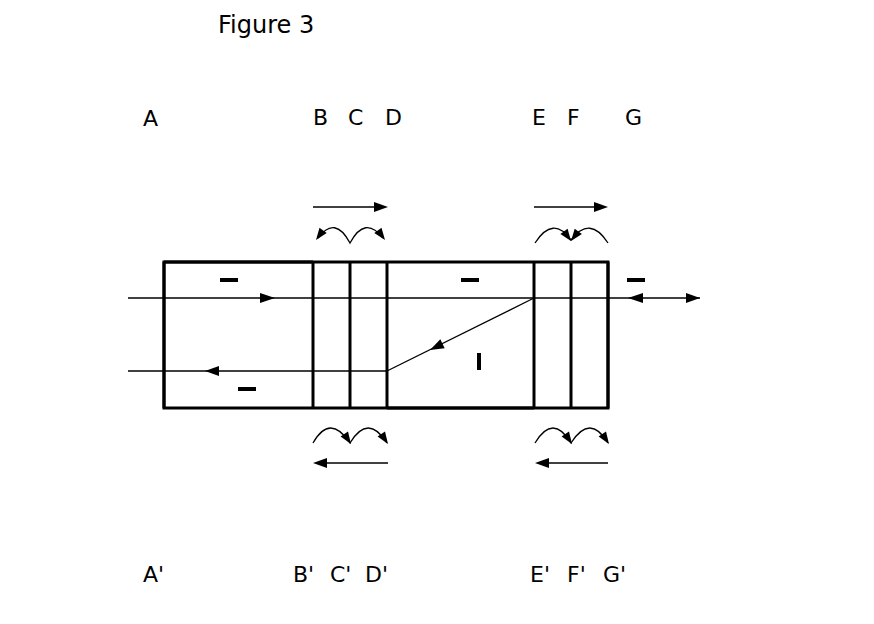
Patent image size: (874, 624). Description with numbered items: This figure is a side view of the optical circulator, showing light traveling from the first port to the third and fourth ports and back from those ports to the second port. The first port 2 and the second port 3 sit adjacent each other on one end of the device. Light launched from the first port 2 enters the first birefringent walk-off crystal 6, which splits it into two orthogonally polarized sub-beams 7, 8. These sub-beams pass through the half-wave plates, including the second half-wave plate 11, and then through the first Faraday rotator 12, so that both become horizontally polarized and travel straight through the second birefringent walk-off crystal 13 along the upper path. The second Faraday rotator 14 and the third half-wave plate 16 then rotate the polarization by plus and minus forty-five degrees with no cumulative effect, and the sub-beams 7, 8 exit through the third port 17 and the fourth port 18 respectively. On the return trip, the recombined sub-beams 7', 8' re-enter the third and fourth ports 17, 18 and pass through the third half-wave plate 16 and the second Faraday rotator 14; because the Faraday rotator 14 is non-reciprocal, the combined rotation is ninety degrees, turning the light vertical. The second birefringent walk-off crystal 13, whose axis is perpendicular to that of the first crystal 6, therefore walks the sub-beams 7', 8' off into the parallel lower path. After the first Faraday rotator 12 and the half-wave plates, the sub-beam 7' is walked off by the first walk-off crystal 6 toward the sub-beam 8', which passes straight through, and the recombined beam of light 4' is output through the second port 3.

The first port 2 is at (165, 297).
The second port 3 is at (165, 368).
The recombined beam of light 4' is at (98, 396).
The first birefringent walk-off crystal 6 is at (278, 262).
The sub-beam 7 is at (200, 256).
The sub-beam 8 is at (191, 259).
The sub-beam 7' is at (256, 442).
The sub-beam 8' is at (187, 439).
The second half-wave plate 11 is at (313, 388).
The first Faraday rotator 12 is at (392, 262).
The second birefringent walk-off crystal 13 is at (443, 409).
The second Faraday rotator 14 is at (533, 409).
The third half-wave plate 16 is at (608, 353).
The third port 17 is at (608, 300).
The fourth port 18 is at (761, 311).